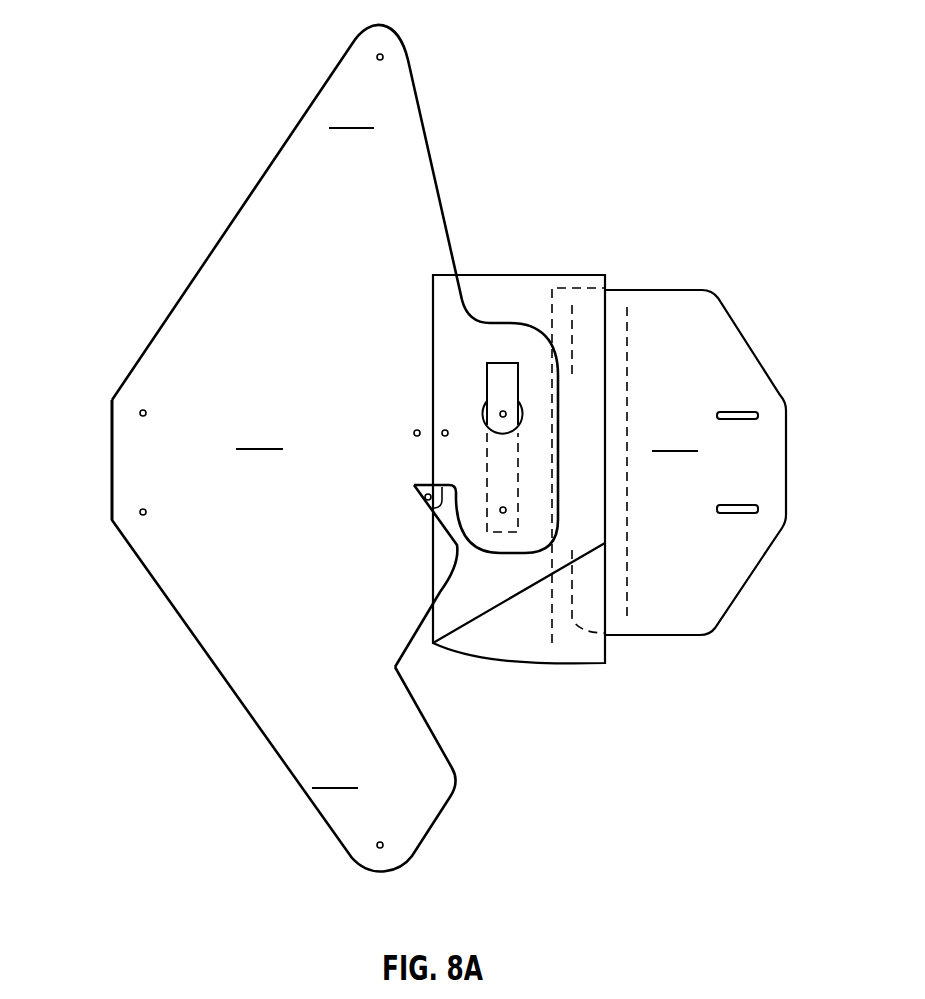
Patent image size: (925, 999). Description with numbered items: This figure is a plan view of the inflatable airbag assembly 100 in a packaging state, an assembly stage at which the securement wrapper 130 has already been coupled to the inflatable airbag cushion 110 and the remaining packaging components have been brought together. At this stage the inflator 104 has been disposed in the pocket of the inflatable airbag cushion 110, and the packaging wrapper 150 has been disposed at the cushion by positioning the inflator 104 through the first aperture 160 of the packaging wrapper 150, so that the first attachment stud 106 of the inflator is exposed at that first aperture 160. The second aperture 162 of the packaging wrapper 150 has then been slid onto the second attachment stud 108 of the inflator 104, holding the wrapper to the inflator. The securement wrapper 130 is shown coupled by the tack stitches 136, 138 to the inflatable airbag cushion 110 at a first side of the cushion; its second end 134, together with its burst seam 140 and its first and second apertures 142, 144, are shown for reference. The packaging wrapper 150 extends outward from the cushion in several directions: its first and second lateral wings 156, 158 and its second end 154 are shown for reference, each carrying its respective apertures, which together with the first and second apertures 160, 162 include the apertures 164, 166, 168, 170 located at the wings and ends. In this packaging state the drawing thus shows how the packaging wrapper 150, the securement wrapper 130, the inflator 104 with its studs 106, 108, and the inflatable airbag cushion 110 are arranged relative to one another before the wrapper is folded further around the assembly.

The inflatable airbag assembly 100 is at (294, 453).
The inflator 104 is at (434, 419).
The first attachment stud 106 is at (490, 508).
The second attachment stud 108 is at (500, 414).
The inflatable airbag cushion 110 is at (518, 662).
The securement wrapper 130 is at (786, 462).
The second end 134 is at (739, 462).
The tack stitch 136 is at (612, 642).
The tack stitch 138 is at (607, 292).
The burst seam 140 is at (628, 362).
The first aperture 142 is at (738, 411).
The second aperture 144 is at (738, 504).
The packaging wrapper 150 is at (275, 425).
The second end 154 is at (112, 455).
The first lateral wing 156 is at (370, 775).
The second lateral wing 158 is at (360, 120).
The first aperture 160 is at (484, 414).
The second aperture 162 is at (500, 510).
The aperture 164 is at (380, 845).
The aperture 166 is at (380, 57).
The aperture 168 is at (143, 413).
The aperture 170 is at (143, 512).